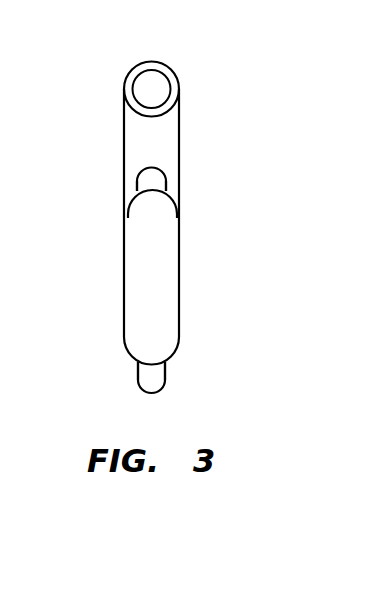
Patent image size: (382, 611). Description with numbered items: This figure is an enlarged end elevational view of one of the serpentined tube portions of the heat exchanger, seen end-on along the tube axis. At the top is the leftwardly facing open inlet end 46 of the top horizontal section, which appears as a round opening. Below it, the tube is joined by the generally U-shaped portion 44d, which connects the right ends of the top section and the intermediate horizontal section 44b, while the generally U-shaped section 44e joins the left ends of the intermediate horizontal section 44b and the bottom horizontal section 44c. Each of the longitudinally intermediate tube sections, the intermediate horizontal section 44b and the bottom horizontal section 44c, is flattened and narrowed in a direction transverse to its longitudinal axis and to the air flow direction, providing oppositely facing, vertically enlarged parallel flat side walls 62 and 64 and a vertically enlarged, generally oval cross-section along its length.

The open inlet end 46 is at (137, 62).
The U-shaped portion 44d is at (179, 128).
The intermediate horizontal section 44b is at (145, 167).
The U-shaped section 44e is at (179, 268).
The bottom horizontal section 44c is at (150, 393).
The flat side wall 62 is at (166, 184).
The flat side wall 64 is at (140, 187).